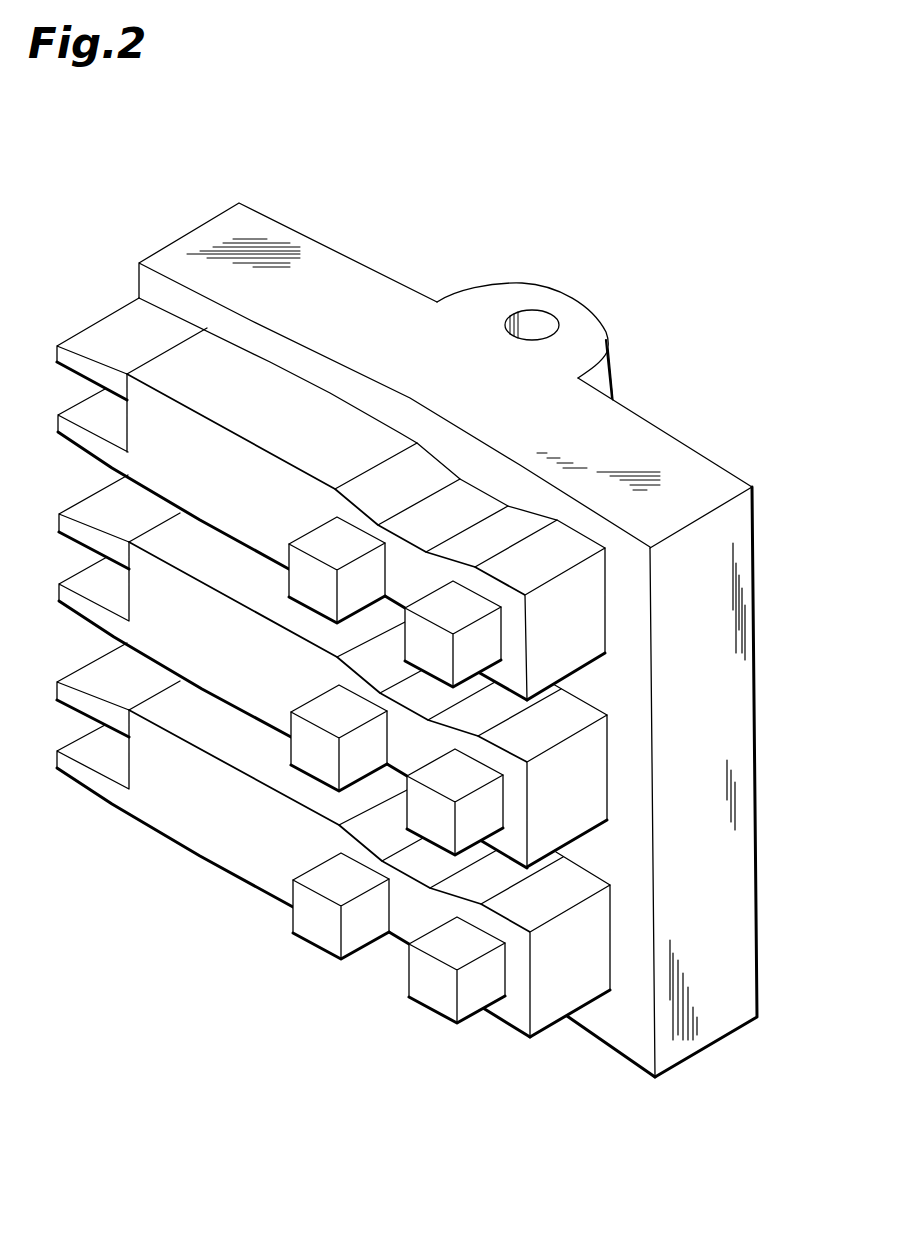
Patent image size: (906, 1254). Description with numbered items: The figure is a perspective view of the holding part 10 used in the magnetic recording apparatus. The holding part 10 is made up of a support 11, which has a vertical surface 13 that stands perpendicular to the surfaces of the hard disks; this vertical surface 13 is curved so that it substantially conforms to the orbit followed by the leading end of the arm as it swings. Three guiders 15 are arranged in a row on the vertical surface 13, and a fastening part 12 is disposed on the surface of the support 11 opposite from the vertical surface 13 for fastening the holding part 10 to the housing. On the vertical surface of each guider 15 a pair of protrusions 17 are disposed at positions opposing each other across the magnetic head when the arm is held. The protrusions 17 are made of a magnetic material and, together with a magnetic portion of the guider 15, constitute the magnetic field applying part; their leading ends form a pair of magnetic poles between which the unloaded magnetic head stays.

The holding part 10 is at (692, 374).
The support 11 is at (688, 477).
The fastening part 12 is at (479, 310).
The vertical surface 13 is at (623, 1025).
The guider 15 is at (597, 597).
The protrusion 17 is at (316, 938).